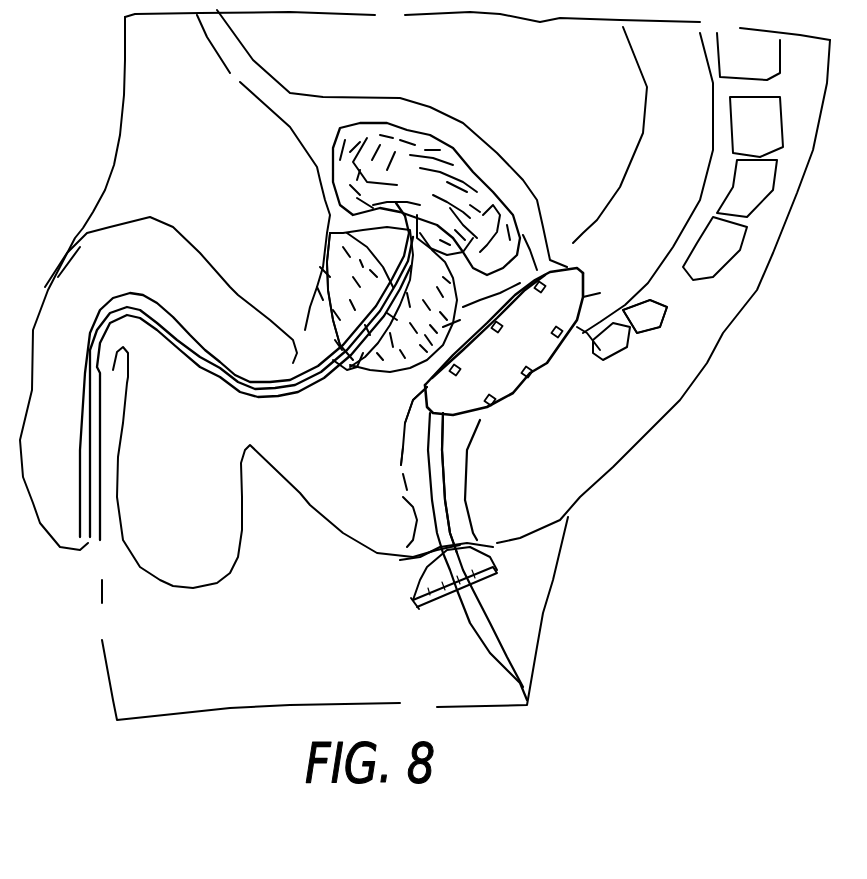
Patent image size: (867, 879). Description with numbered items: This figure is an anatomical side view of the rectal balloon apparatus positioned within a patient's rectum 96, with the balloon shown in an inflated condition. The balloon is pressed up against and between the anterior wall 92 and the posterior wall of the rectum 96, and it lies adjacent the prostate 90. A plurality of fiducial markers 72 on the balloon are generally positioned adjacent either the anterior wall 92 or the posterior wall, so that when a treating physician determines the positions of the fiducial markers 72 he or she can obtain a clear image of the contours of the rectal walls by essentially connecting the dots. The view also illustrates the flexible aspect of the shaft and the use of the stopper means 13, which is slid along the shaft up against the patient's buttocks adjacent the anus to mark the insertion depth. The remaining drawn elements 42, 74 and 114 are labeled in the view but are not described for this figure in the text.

The insertion tool 13 is at (413, 600).
The needle shaft 42 is at (507, 537).
The tissue anchor 72 is at (543, 232).
The sacrospinous ligament 74 is at (612, 363).
The cervix 90 is at (352, 372).
The vaginal apex 92 is at (427, 383).
The vaginal wall 96 is at (406, 455).
The implant mesh 114 is at (583, 265).